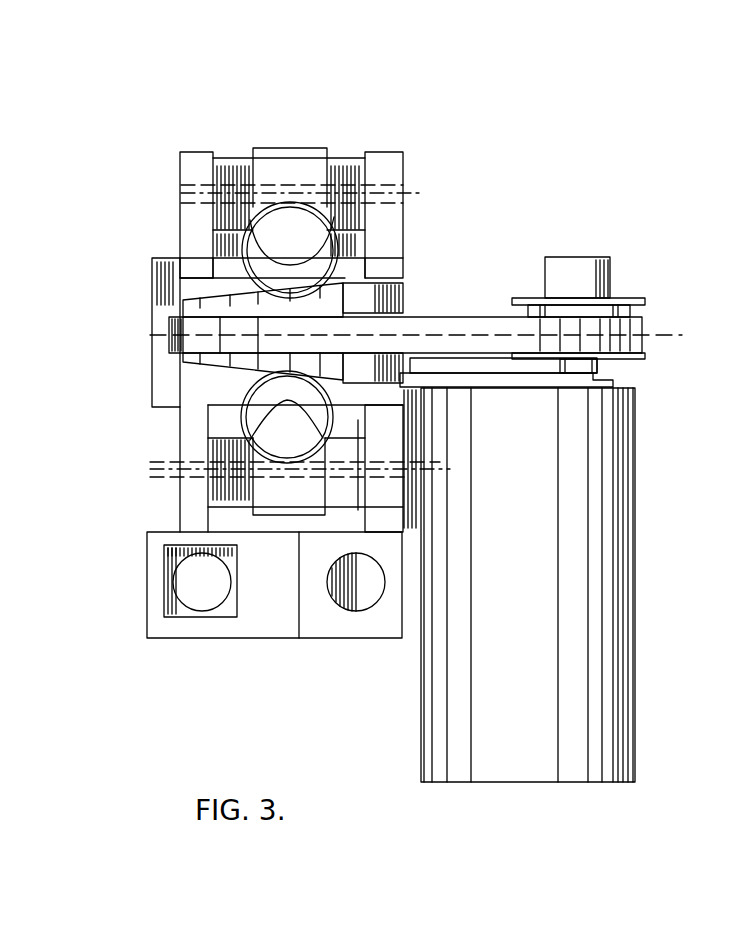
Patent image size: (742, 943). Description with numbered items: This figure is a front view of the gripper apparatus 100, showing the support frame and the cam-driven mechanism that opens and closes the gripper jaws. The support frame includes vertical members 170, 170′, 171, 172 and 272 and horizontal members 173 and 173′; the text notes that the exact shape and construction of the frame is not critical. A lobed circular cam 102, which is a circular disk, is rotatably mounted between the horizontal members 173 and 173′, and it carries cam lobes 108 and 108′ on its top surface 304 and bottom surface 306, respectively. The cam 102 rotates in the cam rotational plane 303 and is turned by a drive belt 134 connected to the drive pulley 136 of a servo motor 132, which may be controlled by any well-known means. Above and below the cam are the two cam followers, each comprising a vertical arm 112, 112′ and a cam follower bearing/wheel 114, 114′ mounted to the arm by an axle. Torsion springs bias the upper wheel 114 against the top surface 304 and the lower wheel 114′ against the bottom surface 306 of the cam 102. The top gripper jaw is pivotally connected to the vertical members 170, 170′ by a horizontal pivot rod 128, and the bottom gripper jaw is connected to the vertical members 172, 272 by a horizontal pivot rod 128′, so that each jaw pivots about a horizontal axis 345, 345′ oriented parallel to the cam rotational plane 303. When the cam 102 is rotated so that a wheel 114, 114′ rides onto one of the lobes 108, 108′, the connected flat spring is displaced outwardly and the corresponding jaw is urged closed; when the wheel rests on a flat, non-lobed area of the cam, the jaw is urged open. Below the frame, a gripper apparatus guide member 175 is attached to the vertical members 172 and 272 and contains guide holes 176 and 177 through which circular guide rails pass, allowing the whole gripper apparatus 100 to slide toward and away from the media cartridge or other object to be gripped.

The gripper apparatus 100 is at (309, 92).
The lobed circular cam 102 is at (409, 294).
The cam lobe 108 is at (380, 262).
The cam lobe 108′ is at (250, 397).
The vertical arm 112 is at (298, 170).
The vertical arm 112′ is at (290, 448).
The cam follower bearing/wheel 114 is at (345, 246).
The cam follower bearing/wheel 114′ is at (405, 412).
The horizontal pivot rod 128 is at (228, 176).
The horizontal pivot rod 128′ is at (235, 480).
The servo motor 132 is at (593, 615).
The drive belt 134 is at (480, 313).
The drive pulley 136 is at (615, 297).
The vertical member 170 is at (180, 163).
The vertical member 170′ is at (403, 163).
The vertical member 171 is at (152, 283).
The vertical member 172 is at (180, 430).
The horizontal member 173 is at (372, 262).
The horizontal member 173′ is at (390, 438).
The gripper apparatus guide member 175 is at (278, 618).
The guide hole 176 is at (185, 575).
The guide hole 177 is at (357, 602).
The vertical member 272 is at (427, 470).
The cam rotational plane 303 is at (673, 331).
The top surface of cam 304 is at (222, 295).
The bottom surface of cam 306 is at (250, 372).
The horizontal axis 345 is at (422, 193).
The horizontal axis 345′ is at (440, 480).